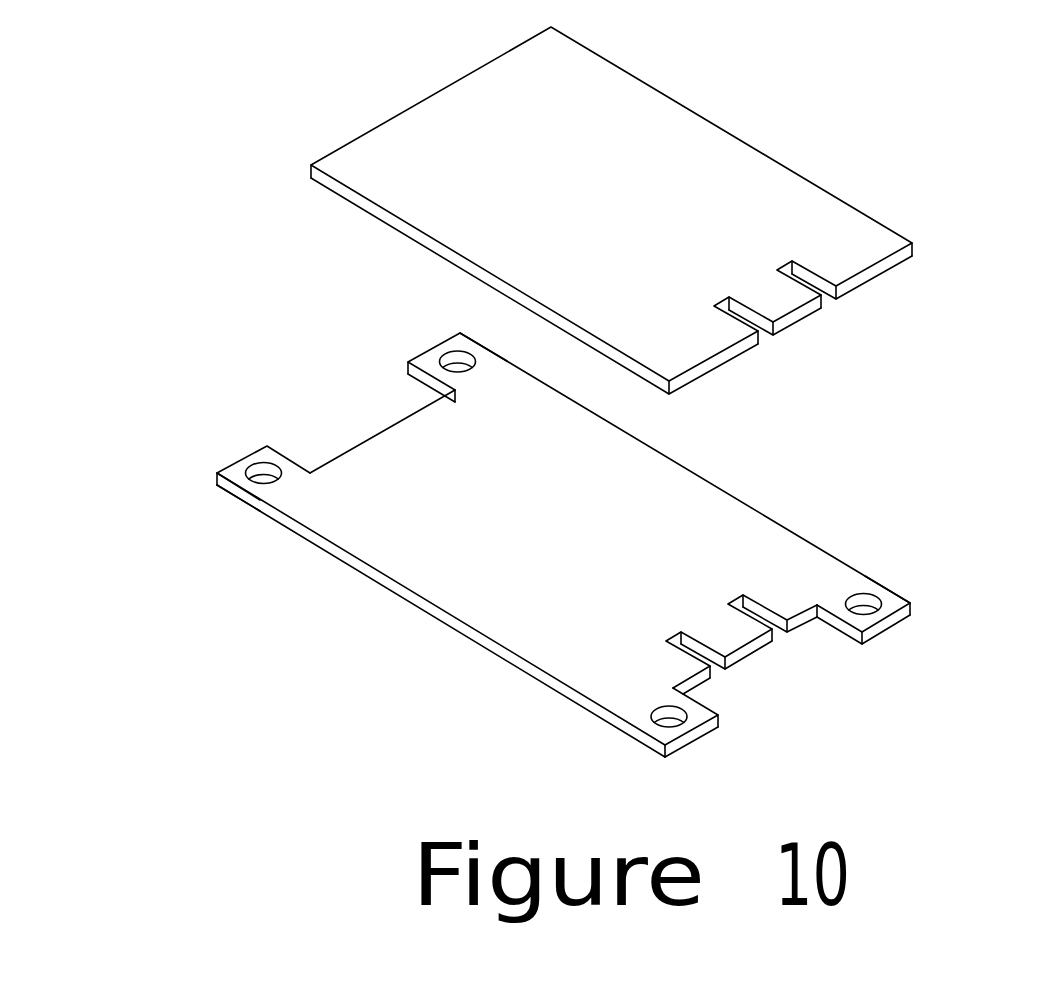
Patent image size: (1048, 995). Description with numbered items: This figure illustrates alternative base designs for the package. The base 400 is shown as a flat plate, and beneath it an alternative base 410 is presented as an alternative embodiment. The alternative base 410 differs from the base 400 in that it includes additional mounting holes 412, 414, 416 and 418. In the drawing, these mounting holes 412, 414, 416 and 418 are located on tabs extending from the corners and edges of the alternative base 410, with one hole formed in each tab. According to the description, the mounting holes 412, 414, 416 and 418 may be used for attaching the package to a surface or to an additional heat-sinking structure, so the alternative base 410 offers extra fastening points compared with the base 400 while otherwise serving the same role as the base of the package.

The base 400 is at (757, 167).
The alternative base 410 is at (727, 522).
The mounting hole 412 is at (868, 602).
The mounting hole 414 is at (683, 720).
The mounting hole 416 is at (448, 357).
The mounting hole 418 is at (257, 470).